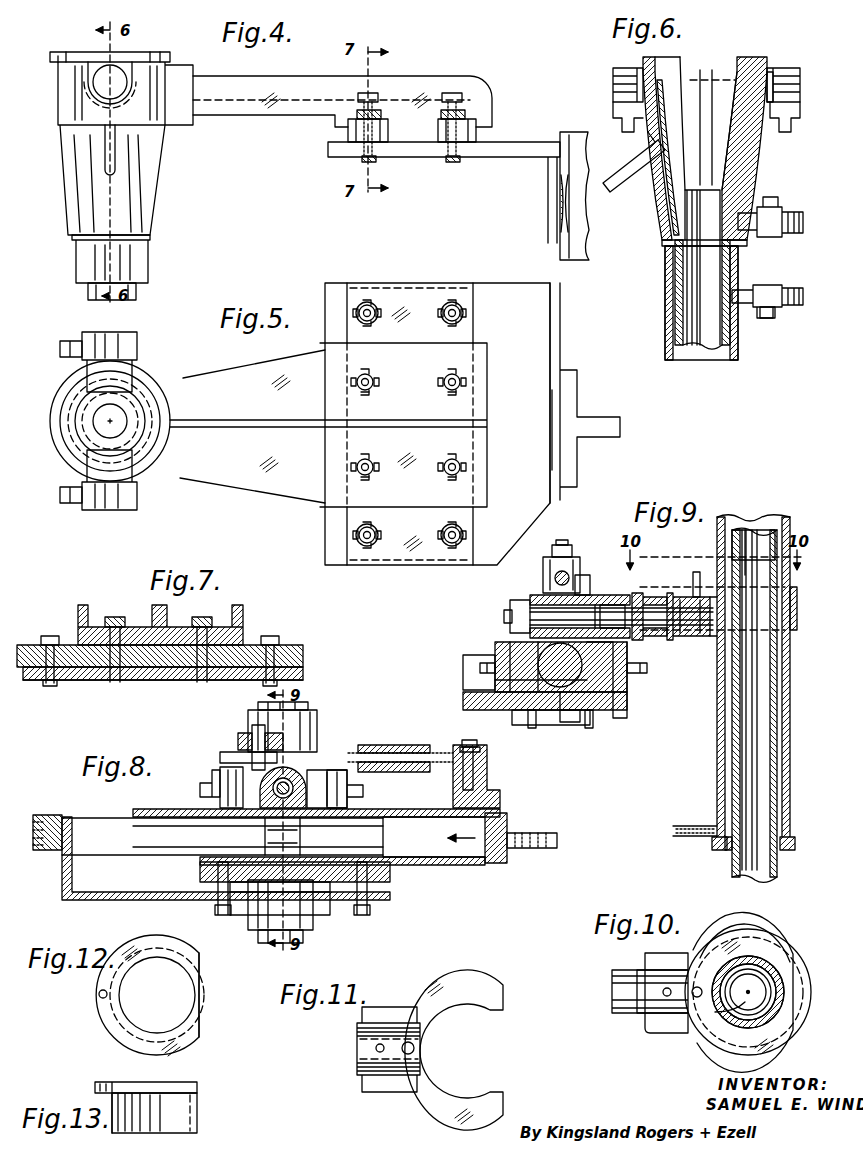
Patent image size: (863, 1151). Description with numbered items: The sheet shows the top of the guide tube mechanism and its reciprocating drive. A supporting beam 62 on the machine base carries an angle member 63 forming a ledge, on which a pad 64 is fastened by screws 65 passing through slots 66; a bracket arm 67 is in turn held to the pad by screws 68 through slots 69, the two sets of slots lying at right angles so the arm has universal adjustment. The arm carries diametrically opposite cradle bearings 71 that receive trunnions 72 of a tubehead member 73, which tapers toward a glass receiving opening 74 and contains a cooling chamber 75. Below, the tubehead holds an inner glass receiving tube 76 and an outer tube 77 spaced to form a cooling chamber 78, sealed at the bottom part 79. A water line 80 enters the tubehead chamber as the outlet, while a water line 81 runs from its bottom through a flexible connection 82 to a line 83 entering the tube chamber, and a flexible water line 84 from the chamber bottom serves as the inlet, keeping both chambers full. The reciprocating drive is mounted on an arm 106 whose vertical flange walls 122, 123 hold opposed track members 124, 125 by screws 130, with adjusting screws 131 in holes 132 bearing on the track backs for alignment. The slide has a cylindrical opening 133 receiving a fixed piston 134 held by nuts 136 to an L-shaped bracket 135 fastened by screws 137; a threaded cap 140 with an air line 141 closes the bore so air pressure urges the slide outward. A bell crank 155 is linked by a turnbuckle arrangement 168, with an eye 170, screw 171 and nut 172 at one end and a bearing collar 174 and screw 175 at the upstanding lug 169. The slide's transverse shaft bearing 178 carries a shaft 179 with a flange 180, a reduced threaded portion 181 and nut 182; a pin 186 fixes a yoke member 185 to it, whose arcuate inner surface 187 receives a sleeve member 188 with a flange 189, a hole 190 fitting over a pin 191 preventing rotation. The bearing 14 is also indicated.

In FIG. 5, the bearing 14 is at (150, 412).
In FIG. 4, the supporting beam 62 is at (583, 130).
In FIG. 5, the supporting beam 62 is at (600, 420).
In FIG. 4, the angle member 63 is at (515, 156).
In FIG. 5, the angle member 63 is at (513, 307).
In FIG. 7, the angle member 63 is at (305, 676).
In FIG. 4, the pad 64 is at (346, 140).
In FIG. 5, the pad 64 is at (463, 283).
In FIG. 7, the pad 64 is at (300, 650).
In FIG. 4, the screws 65 is at (360, 108).
In FIG. 5, the screws 65 is at (370, 300).
In FIG. 7, the screws 65 is at (55, 635).
In FIG. 5, the slots 66 is at (447, 303).
In FIG. 7, the slots 66 is at (303, 662).
In FIG. 4, the bracket arm 67 is at (223, 115).
In FIG. 5, the bracket arm 67 is at (292, 368).
In FIG. 6, the bracket arm 67 is at (790, 120).
In FIG. 7, the bracket arm 67 is at (240, 615).
In FIG. 4, the screws 68 is at (373, 93).
In FIG. 5, the screws 68 is at (444, 386).
In FIG. 7, the screws 68 is at (115, 615).
In FIG. 5, the slots 69 is at (448, 393).
In FIG. 7, the slots 69 is at (128, 665).
In FIG. 4, the cradle bearings 71 is at (88, 88).
In FIG. 5, the cradle bearings 71 is at (138, 345).
In FIG. 6, the cradle bearings 71 is at (620, 68).
In FIG. 4, the trunnions 72 is at (115, 72).
In FIG. 5, the trunnions 72 is at (105, 340).
In FIG. 6, the trunnions 72 is at (623, 85).
In FIG. 4, the tubehead member 73 is at (58, 55).
In FIG. 5, the tubehead member 73 is at (66, 452).
In FIG. 6, the tubehead member 73 is at (660, 62).
In FIG. 6, the glass receiving opening 74 is at (738, 60).
In FIG. 6, the cooling chamber 75 is at (672, 195).
In FIG. 4, the inner glass receiving tube 76 is at (88, 296).
In FIG. 5, the inner glass receiving tube 76 is at (93, 432).
In FIG. 6, the inner glass receiving tube 76 is at (690, 262).
In FIG. 8, the inner glass receiving tube 76 is at (308, 704).
In FIG. 9, the inner glass receiving tube 76 is at (757, 768).
In FIG. 10, the inner glass receiving tube 76 is at (734, 1010).
In FIG. 4, the outer tube 77 is at (76, 268).
In FIG. 6, the outer tube 77 is at (668, 292).
In FIG. 8, the outer tube 77 is at (317, 724).
In FIG. 9, the outer tube 77 is at (717, 748).
In FIG. 10, the outer tube 77 is at (738, 1014).
In FIG. 6, the cooling chamber 78 is at (678, 313).
In FIG. 9, the cooling chamber 78 is at (730, 768).
In FIG. 10, the cooling chamber 78 is at (755, 967).
In FIG. 9, the bottom part 79 is at (717, 852).
In FIG. 4, the water line 80 is at (104, 152).
In FIG. 6, the water line 80 is at (615, 180).
In FIG. 6, the water line 81 is at (757, 207).
In FIG. 6, the flexible connection 82 is at (790, 290).
In FIG. 6, the line 83 is at (746, 314).
In FIG. 9, the flexible water line 84 is at (690, 824).
In FIG. 8, the arm 106 is at (200, 875).
In FIG. 9, the arm 106 is at (463, 703).
In FIG. 9, the vertical flange wall 122 is at (500, 645).
In FIG. 9, the vertical flange wall 123 is at (628, 652).
In FIG. 9, the track member 124 is at (495, 686).
In FIG. 9, the track member 125 is at (625, 690).
In FIG. 8, the screws 130 is at (240, 895).
In FIG. 9, the screws 130 is at (592, 714).
In FIG. 9, the adjusting screws 131 is at (480, 667).
In FIG. 9, the holes 132 is at (480, 660).
In FIG. 8, the cylindrical opening 133 is at (430, 860).
In FIG. 9, the cylindrical opening 133 is at (622, 615).
In FIG. 8, the fixed piston 134 is at (160, 815).
In FIG. 9, the fixed piston 134 is at (552, 605).
In FIG. 8, the L-shaped bracket 135 is at (62, 878).
In FIG. 9, the L-shaped bracket 135 is at (575, 712).
In FIG. 8, the nuts 136 is at (60, 815).
In FIG. 8, the screws 137 is at (220, 915).
In FIG. 9, the screws 137 is at (592, 730).
In FIG. 8, the threaded cap 140 is at (507, 818).
In FIG. 8, the air line 141 is at (545, 848).
In FIG. 8, the bell crank 155 is at (238, 745).
In FIG. 8, the turnbuckle arrangement 168 is at (398, 746).
In FIG. 9, the turnbuckle arrangement 168 is at (545, 570).
In FIG. 8, the upstanding lug 169 is at (500, 790).
In FIG. 8, the eye 170 is at (245, 758).
In FIG. 9, the eye 170 is at (583, 560).
In FIG. 10, the eye 170 is at (612, 995).
In FIG. 8, the screw 171 is at (240, 775).
In FIG. 9, the screw 171 is at (568, 548).
In FIG. 8, the nut 172 is at (252, 728).
In FIG. 9, the nut 172 is at (575, 552).
In FIG. 8, the bearing collar 174 is at (462, 750).
In FIG. 8, the screw 175 is at (468, 740).
In FIG. 8, the transverse shaft bearing 178 is at (295, 778).
In FIG. 9, the transverse shaft bearing 178 is at (606, 600).
In FIG. 8, the shaft 179 is at (270, 815).
In FIG. 9, the shaft 179 is at (598, 595).
In FIG. 9, the flange 180 is at (640, 592).
In FIG. 10, the flange 180 is at (640, 1013).
In FIG. 9, the reduced threaded portion 181 is at (504, 612).
In FIG. 9, the nut 182 is at (512, 600).
In FIG. 9, the yoke member 185 is at (672, 595).
In FIG. 10, the yoke member 185 is at (660, 1033).
In FIG. 11, the yoke member 185 is at (360, 1048).
In FIG. 9, the pin 186 is at (700, 585).
In FIG. 10, the pin 186 is at (668, 988).
In FIG. 9, the arcuate inner surface 187 is at (786, 585).
In FIG. 10, the arcuate inner surface 187 is at (760, 945).
In FIG. 11, the arcuate inner surface 187 is at (503, 1010).
In FIG. 9, the sleeve member 188 is at (720, 640).
In FIG. 12, the sleeve member 188 is at (203, 987).
In FIG. 13, the sleeve member 188 is at (170, 1110).
In FIG. 8, the flange 189 is at (365, 778).
In FIG. 9, the flange 189 is at (757, 585).
In FIG. 10, the flange 189 is at (731, 933).
In FIG. 12, the flange 189 is at (110, 1028).
In FIG. 13, the flange 189 is at (140, 1086).
In FIG. 10, the hole 190 is at (720, 1014).
In FIG. 12, the hole 190 is at (100, 998).
In FIG. 9, the pin 191 is at (745, 575).
In FIG. 10, the pin 191 is at (697, 985).
In FIG. 11, the pin 191 is at (414, 1048).